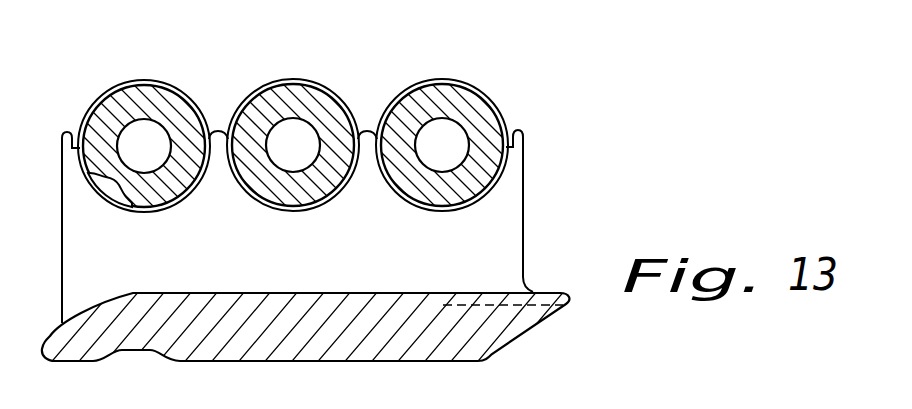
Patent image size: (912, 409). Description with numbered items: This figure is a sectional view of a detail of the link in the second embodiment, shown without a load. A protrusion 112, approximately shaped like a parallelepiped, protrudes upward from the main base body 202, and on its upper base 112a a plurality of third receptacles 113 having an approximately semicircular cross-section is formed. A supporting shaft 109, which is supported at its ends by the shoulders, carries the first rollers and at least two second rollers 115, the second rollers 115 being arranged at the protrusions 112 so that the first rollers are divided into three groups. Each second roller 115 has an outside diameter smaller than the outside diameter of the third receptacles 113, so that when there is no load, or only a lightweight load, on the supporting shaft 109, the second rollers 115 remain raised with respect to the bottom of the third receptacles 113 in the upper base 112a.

The supporting shaft 109 is at (133, 139).
The second roller 115 is at (282, 139).
The protrusion 112 is at (345, 161).
The upper base 112a is at (217, 128).
The third receptacle 113 is at (103, 192).
The main base body 202 is at (481, 332).